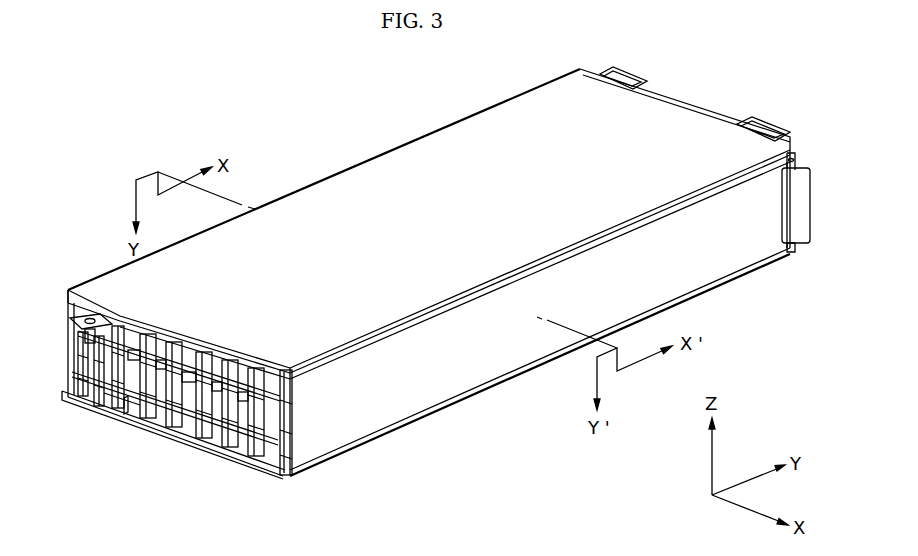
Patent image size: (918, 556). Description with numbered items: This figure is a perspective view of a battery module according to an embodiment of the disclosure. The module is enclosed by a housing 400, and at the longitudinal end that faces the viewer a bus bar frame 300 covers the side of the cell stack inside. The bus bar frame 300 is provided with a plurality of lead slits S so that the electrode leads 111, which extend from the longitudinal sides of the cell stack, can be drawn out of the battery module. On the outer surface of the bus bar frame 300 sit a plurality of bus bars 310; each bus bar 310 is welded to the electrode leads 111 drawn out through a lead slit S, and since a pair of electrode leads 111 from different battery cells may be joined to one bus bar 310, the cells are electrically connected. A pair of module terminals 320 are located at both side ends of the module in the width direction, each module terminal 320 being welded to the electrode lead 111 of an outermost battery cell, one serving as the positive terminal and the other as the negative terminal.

The housing 400 is at (388, 172).
The bus bar frame 300 is at (272, 443).
The bus bar 310 is at (112, 390).
The module terminal 320 is at (72, 321).
The electrode lead 111 is at (80, 367).
The lead slit S is at (122, 402).